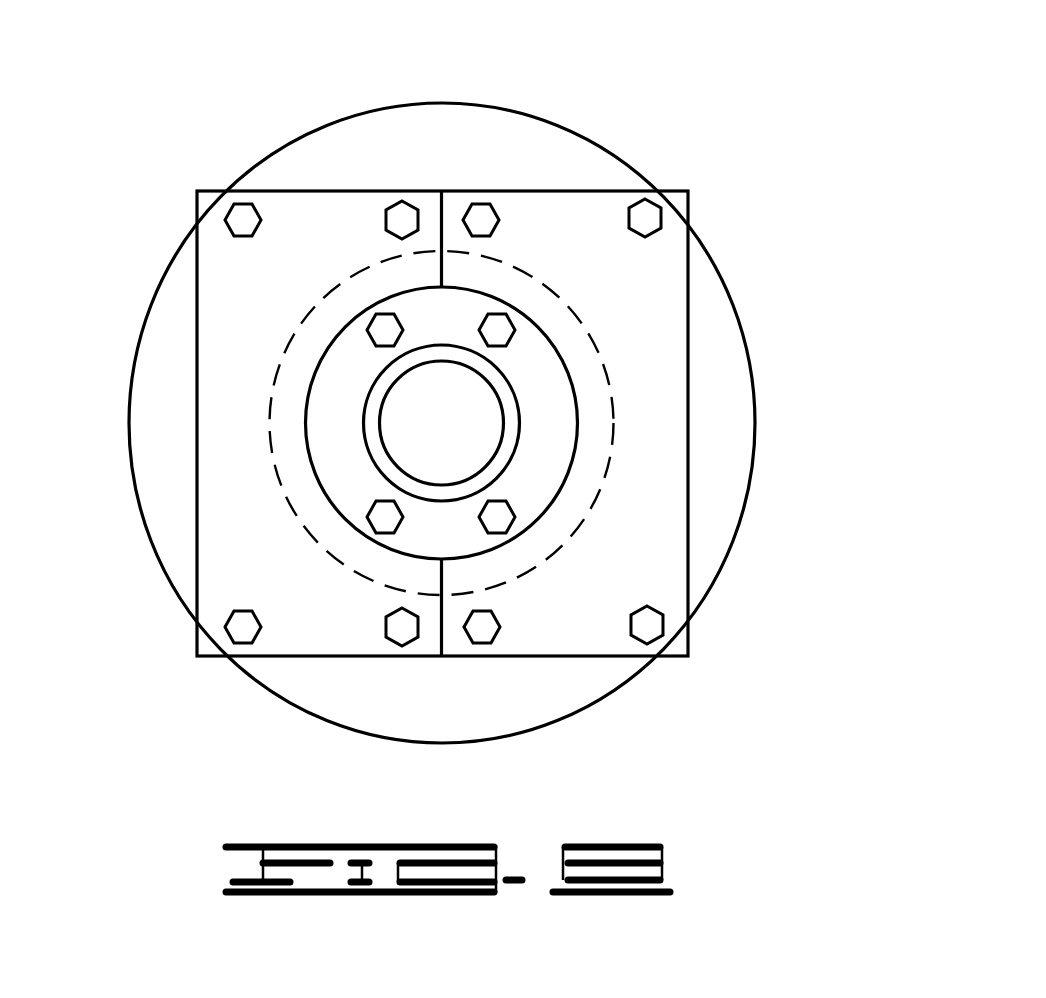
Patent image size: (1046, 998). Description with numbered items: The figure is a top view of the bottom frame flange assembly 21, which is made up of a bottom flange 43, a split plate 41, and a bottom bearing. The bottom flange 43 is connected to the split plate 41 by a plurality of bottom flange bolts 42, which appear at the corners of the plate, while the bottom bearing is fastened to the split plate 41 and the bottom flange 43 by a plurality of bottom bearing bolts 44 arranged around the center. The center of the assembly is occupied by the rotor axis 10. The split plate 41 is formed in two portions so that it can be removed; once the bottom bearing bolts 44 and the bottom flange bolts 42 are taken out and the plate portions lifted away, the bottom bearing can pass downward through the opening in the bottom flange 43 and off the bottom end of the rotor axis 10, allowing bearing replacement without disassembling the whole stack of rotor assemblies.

The rotor axis 10 is at (400, 443).
The bottom frame flange assembly 21 is at (680, 717).
The split plate 41 is at (234, 376).
The bottom flange bolts 42 is at (239, 219).
The bottom flange 43 is at (560, 130).
The bottom bearing bolts 44 is at (507, 520).